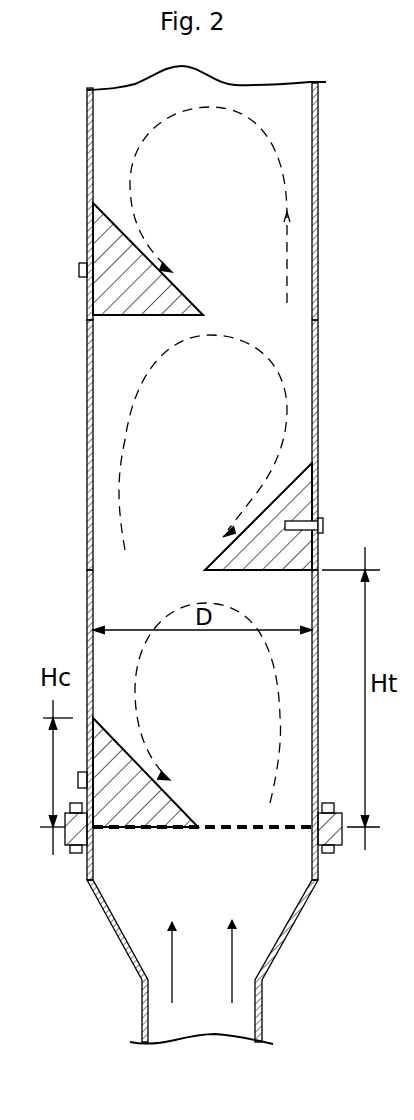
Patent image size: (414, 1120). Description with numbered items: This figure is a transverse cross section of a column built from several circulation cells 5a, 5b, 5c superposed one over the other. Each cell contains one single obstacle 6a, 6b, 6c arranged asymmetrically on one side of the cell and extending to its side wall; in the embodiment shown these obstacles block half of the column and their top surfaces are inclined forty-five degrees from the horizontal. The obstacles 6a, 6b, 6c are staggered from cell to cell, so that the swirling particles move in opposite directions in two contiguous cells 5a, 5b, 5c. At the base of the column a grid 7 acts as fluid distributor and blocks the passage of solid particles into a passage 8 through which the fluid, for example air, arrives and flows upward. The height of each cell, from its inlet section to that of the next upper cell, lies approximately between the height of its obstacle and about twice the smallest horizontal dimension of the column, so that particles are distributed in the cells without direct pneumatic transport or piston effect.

The circulation cell 5a is at (319, 635).
The circulation cell 5b is at (319, 390).
The circulation cell 5c is at (319, 185).
The obstacle 6a is at (160, 803).
The obstacle 6b is at (282, 497).
The obstacle 6c is at (174, 297).
The grid 7 is at (202, 847).
The passage 8 is at (262, 950).